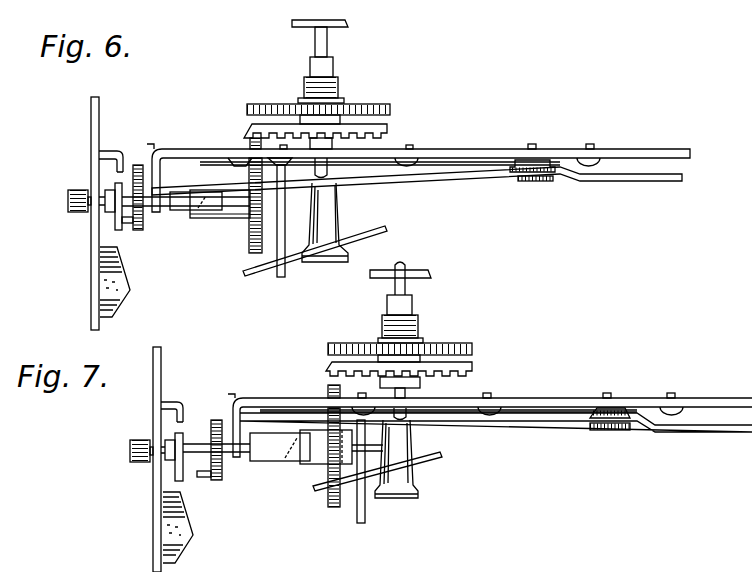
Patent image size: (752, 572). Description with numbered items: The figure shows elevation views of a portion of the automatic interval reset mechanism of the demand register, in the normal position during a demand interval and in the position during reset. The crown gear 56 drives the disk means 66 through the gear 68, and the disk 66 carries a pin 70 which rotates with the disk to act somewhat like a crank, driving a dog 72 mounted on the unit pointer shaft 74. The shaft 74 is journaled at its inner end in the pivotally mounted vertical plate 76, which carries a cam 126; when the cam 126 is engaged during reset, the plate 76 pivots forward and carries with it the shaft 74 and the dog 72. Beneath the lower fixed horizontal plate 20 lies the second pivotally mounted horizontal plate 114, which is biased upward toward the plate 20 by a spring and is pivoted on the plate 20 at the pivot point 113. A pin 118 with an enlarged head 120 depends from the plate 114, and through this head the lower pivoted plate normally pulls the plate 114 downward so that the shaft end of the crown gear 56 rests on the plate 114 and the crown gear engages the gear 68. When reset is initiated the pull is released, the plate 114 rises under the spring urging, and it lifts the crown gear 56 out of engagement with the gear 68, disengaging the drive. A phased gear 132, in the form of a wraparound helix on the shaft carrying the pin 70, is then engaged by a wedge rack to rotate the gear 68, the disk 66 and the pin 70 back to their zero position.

In FIG. 6, the lower fixed horizontal plate 20 is at (672, 152).
In FIG. 7, the lower fixed horizontal plate 20 is at (640, 400).
In FIG. 6, the crown gear 56 is at (390, 132).
In FIG. 7, the crown gear 56 is at (472, 370).
In FIG. 6, the disk means 66 is at (143, 224).
In FIG. 7, the disk means 66 is at (222, 478).
In FIG. 6, the gear 68 is at (250, 141).
In FIG. 7, the gear 68 is at (328, 390).
In FIG. 6, the pin 70 is at (128, 225).
In FIG. 7, the pin 70 is at (205, 478).
In FIG. 6, the dog 72 is at (118, 217).
In FIG. 7, the dog 72 is at (177, 470).
In FIG. 6, the unit pointer shaft 74 is at (68, 204).
In FIG. 7, the unit pointer shaft 74 is at (130, 452).
In FIG. 6, the pivotally mounted vertical plate 76 is at (91, 121).
In FIG. 7, the pivotally mounted vertical plate 76 is at (153, 388).
In FIG. 6, the pivot point 113 is at (545, 180).
In FIG. 7, the pivot point 113 is at (610, 430).
In FIG. 6, the second pivotally mounted horizontal plate 114 is at (465, 180).
In FIG. 7, the second pivotally mounted horizontal plate 114 is at (513, 423).
In FIG. 6, the pin 118 is at (330, 212).
In FIG. 7, the pin 118 is at (410, 442).
In FIG. 6, the enlarged head 120 is at (370, 235).
In FIG. 7, the enlarged head 120 is at (420, 490).
In FIG. 6, the cam 126 is at (118, 290).
In FIG. 7, the cam 126 is at (185, 540).
In FIG. 6, the phased gear 132 is at (225, 205).
In FIG. 7, the phased gear 132 is at (293, 462).